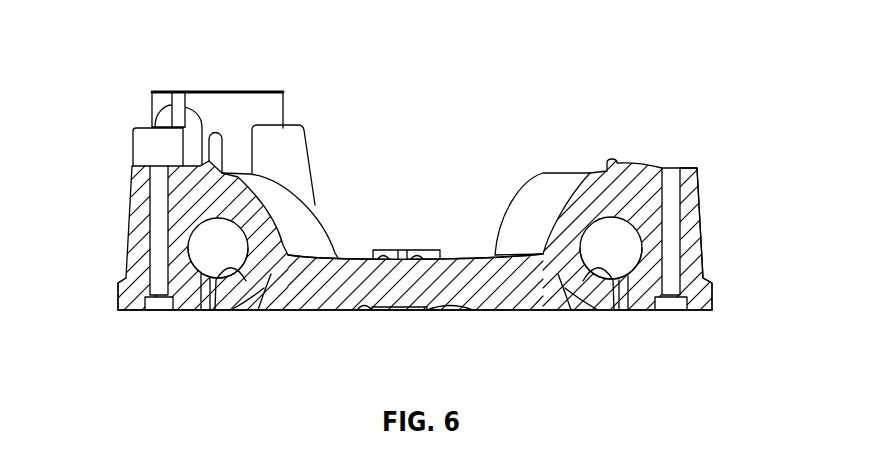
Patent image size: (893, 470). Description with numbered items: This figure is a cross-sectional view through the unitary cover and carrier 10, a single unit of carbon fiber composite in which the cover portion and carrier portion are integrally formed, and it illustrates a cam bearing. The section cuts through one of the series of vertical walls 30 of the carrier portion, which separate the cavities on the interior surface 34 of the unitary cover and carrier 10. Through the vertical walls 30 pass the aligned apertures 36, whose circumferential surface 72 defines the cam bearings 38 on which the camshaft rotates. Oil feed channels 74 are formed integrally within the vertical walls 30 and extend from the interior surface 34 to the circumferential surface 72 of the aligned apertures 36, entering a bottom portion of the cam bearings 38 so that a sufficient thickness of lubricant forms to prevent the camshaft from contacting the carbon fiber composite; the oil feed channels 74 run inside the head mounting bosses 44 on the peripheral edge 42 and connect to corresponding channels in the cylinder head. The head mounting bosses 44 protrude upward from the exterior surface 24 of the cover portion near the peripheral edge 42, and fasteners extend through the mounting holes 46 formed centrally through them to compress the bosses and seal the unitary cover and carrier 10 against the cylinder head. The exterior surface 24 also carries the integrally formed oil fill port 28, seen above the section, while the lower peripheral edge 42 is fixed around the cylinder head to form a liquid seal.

The unitary cover and carrier 10 is at (133, 58).
The exterior surface 24 is at (515, 200).
The oil fill port 28 is at (251, 90).
The vertical walls 30 is at (263, 270).
The interior surface 34 is at (185, 315).
The aligned apertures 36 is at (213, 242).
The cam bearings 38 is at (193, 250).
The peripheral edge 42 is at (147, 318).
The head mounting bosses 44 is at (142, 163).
The mounting holes 46 is at (158, 202).
The circumferential surface 72 is at (222, 268).
The oil feed channels 74 is at (208, 313).